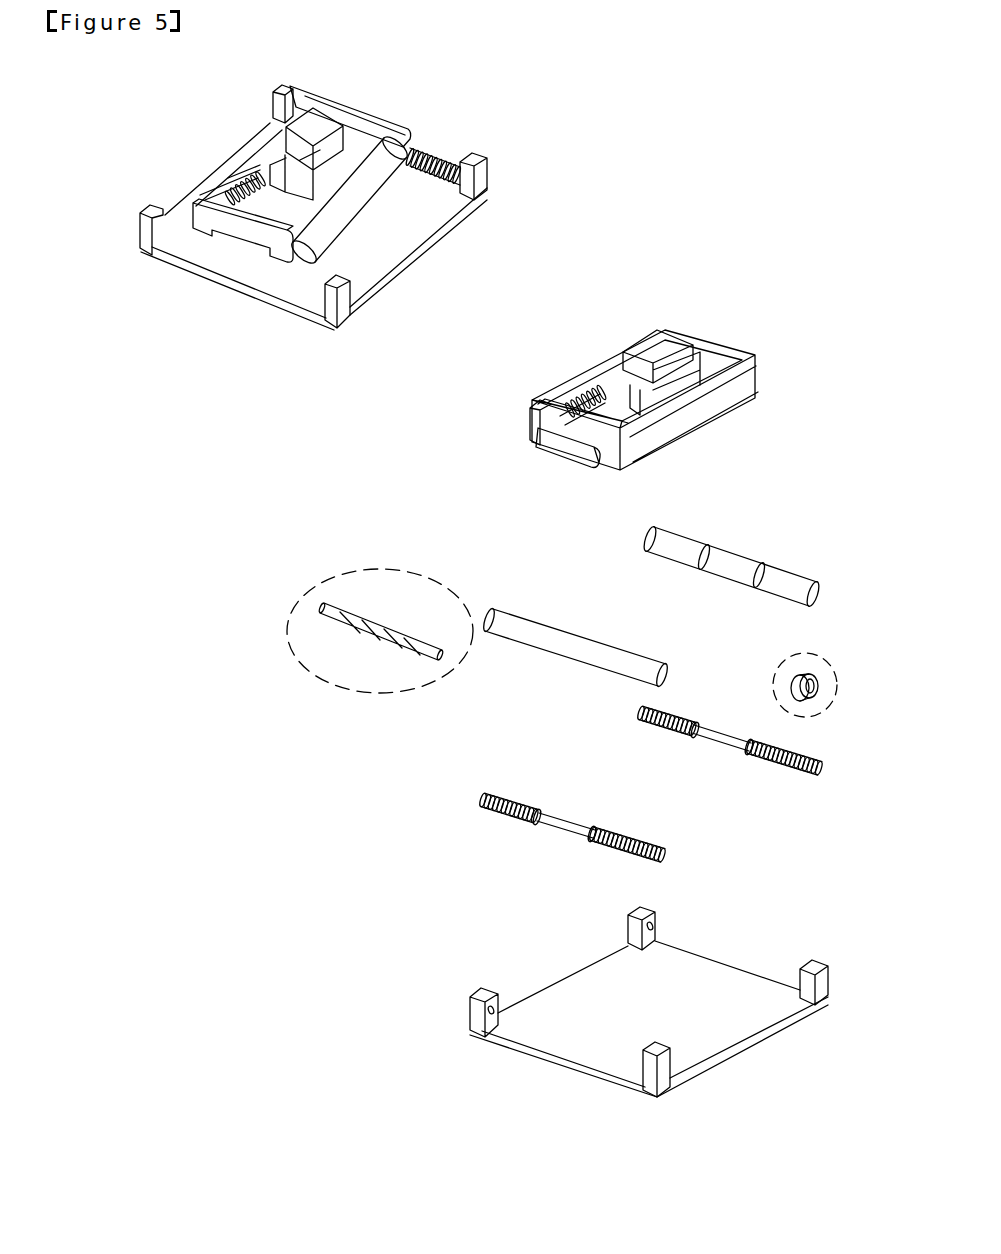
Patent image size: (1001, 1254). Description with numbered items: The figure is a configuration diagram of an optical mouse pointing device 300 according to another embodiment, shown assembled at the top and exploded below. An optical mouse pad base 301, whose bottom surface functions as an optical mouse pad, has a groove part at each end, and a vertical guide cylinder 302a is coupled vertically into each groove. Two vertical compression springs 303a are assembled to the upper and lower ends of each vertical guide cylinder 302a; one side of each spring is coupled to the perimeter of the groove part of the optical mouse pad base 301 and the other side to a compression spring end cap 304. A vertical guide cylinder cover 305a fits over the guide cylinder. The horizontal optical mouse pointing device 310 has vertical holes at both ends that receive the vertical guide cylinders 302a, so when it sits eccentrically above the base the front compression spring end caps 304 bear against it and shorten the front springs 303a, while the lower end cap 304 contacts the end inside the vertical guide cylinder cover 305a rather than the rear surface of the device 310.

The clamp module assembly 300 is at (120, 122).
The horizontal optical mouse pointing device 310 is at (567, 382).
The vertical guide cylinder cover 305a is at (543, 628).
The compression spring end cap 304 is at (595, 838).
The vertical compression spring 303a is at (655, 835).
The vertical guide cylinder 302a is at (577, 831).
The optical mouse pad base 301 is at (700, 980).